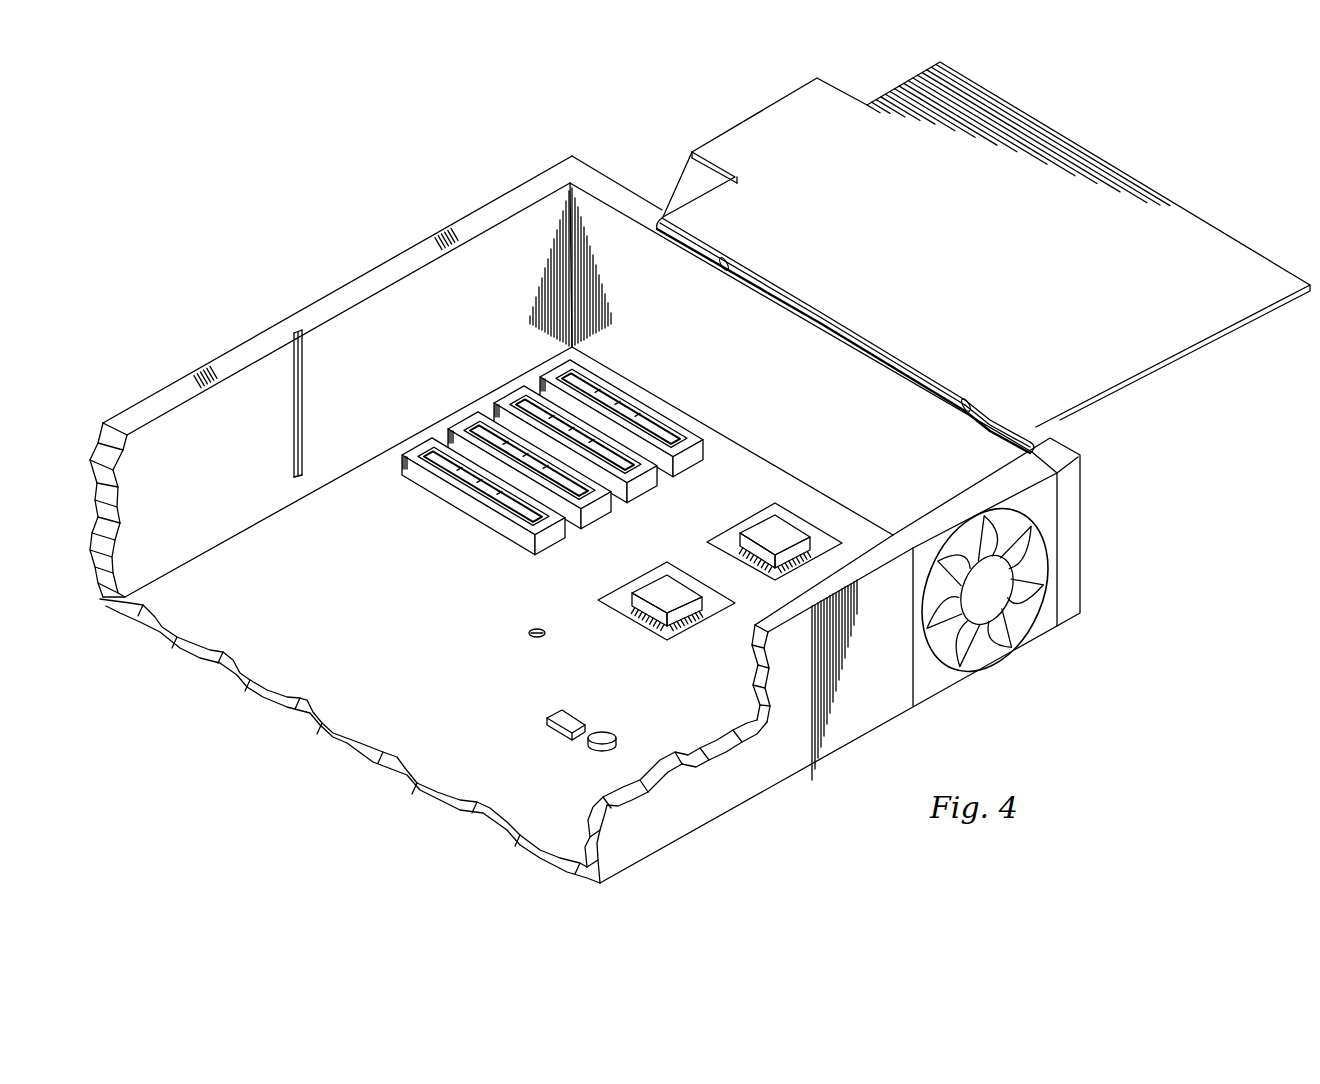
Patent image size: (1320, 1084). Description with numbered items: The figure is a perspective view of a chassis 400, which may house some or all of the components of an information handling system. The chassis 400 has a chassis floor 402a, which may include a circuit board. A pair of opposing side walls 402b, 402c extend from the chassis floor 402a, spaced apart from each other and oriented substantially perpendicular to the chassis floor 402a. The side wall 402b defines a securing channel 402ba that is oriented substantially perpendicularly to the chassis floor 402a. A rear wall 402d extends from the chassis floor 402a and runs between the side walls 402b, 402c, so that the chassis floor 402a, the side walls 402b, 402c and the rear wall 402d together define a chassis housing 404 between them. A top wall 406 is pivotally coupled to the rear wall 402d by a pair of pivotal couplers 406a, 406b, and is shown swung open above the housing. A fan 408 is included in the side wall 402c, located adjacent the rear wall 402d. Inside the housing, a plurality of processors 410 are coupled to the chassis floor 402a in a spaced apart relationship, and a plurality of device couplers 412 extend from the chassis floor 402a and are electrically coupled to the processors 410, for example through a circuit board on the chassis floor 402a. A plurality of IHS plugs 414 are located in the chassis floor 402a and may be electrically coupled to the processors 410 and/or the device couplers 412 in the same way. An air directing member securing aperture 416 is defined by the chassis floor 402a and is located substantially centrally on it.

The chassis 400 is at (350, 190).
The chassis floor 402a is at (374, 621).
The side wall 402b is at (318, 308).
The securing channel 402ba is at (306, 398).
The side wall 402c is at (690, 827).
The rear wall 402d is at (834, 353).
The chassis housing 404 is at (494, 272).
The top wall 406 is at (1235, 233).
The pivotal coupler 406a is at (694, 247).
The pivotal coupler 406b is at (975, 420).
The fan 408 is at (985, 630).
The processor 410 is at (655, 588).
The device coupler 412 is at (467, 422).
The IHS plug 414 is at (560, 713).
The air directing member securing aperture 416 is at (537, 630).